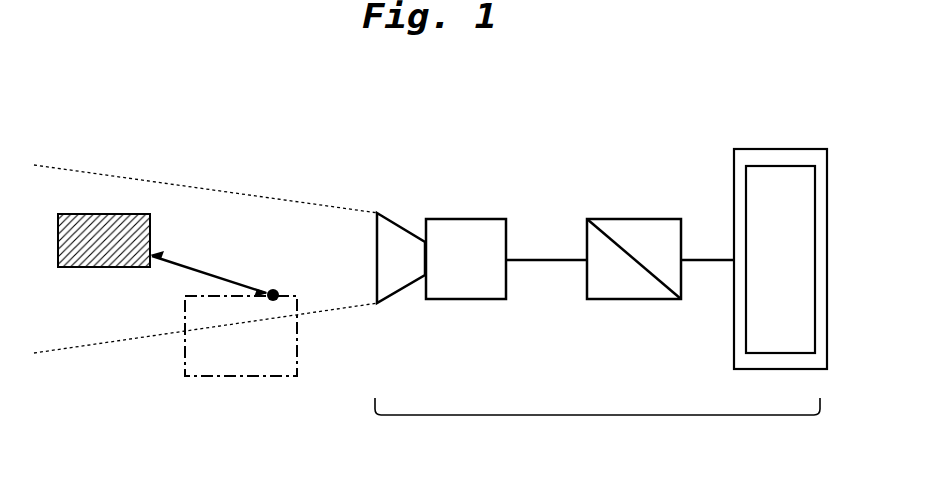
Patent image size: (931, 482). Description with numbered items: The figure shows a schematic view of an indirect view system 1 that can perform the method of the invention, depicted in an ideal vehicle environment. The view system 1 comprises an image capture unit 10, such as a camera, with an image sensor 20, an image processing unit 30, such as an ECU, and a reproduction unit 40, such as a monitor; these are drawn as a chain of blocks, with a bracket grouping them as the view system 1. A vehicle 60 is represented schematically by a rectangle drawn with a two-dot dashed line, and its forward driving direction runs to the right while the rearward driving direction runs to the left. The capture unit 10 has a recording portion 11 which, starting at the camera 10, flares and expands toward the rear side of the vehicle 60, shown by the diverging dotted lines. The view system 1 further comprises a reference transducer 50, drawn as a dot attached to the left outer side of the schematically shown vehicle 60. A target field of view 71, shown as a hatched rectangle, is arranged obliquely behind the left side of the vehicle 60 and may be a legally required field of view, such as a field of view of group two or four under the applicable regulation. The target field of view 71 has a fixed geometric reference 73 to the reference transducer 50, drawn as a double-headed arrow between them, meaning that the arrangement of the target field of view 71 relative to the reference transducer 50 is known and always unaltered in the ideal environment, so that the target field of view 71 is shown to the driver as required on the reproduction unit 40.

The indirect view system 1 is at (600, 415).
The image capture unit 10 is at (469, 227).
The image sensor 20 is at (455, 240).
The recording portion 11 is at (310, 258).
The image processing unit 30 is at (657, 232).
The reproduction unit 40 is at (772, 148).
The reference transducer 50 is at (272, 289).
The vehicle 60 is at (245, 376).
The target field of view 71 is at (99, 238).
The fixed geometric reference 73 is at (205, 268).